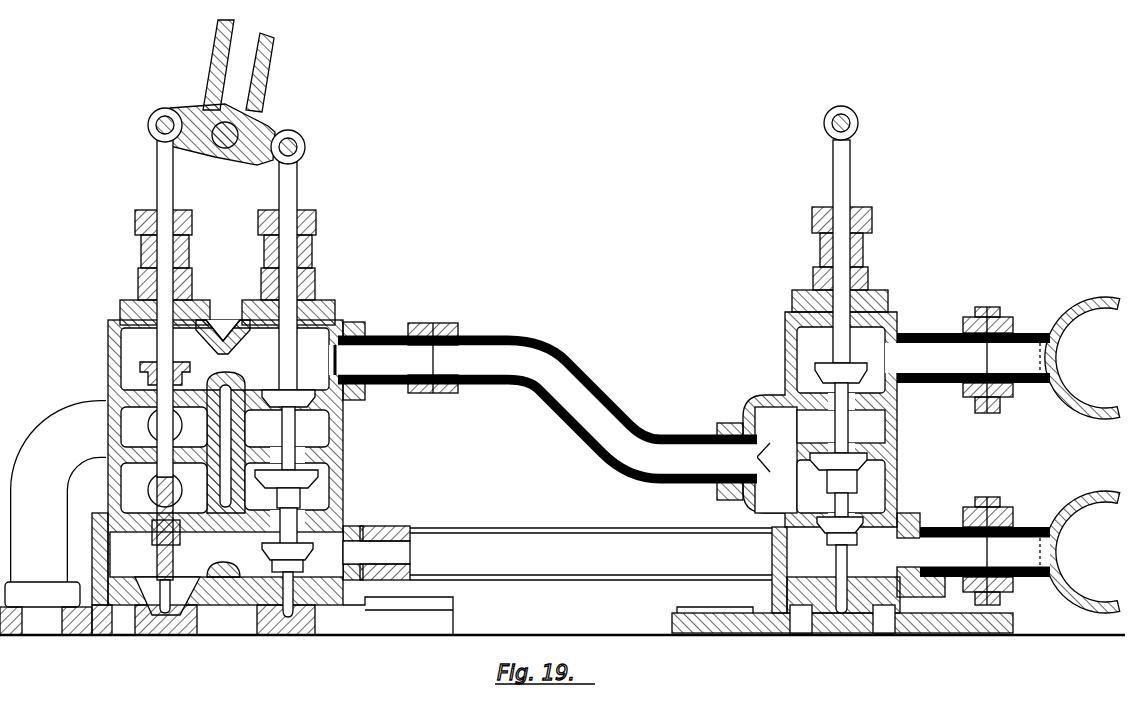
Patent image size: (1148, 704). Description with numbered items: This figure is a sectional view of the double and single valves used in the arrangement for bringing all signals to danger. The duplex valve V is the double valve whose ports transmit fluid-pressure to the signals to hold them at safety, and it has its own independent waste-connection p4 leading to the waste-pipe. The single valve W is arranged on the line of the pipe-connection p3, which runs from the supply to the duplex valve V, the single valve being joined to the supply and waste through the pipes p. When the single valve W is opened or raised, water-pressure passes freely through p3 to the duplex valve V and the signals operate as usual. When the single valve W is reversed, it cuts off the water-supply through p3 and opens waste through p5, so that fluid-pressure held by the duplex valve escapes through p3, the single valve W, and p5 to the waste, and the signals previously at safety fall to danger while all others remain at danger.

The duplex valve V is at (272, 371).
The single valve W is at (842, 369).
The pipe p is at (1019, 460).
The pipe-connection p3 is at (547, 386).
The independent waste-connection p4 is at (566, 562).
The waste connection p5 is at (985, 544).